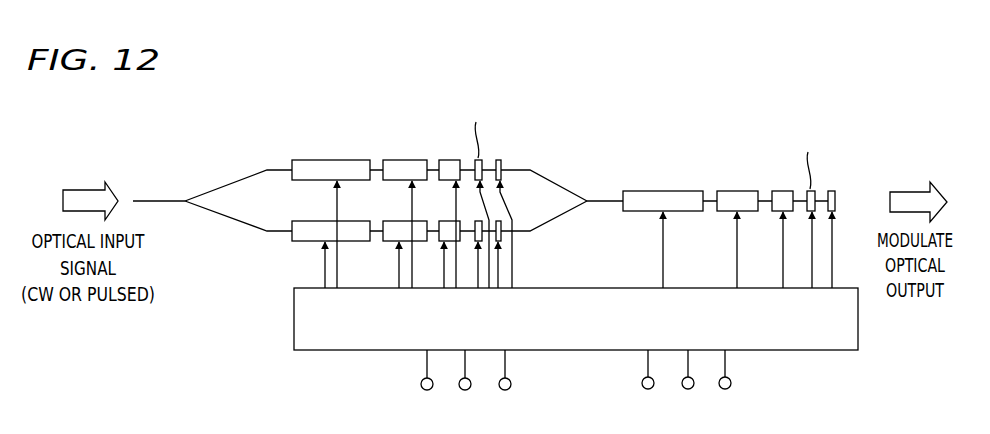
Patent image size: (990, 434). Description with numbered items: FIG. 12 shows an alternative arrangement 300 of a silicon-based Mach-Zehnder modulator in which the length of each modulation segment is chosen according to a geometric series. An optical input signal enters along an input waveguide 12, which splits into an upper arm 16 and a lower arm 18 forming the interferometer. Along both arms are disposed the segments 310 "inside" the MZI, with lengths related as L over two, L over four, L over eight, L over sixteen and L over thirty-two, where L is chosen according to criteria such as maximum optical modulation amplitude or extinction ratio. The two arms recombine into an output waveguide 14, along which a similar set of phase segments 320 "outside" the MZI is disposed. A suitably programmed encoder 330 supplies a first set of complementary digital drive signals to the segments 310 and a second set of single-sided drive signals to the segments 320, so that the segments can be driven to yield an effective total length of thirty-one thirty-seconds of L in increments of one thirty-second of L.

The optical input waveguide 12 is at (157, 200).
The output waveguide 14 is at (603, 198).
The first waveguide arm 16 is at (225, 180).
The second waveguide arm 18 is at (225, 220).
The alternative arrangement 300 is at (590, 95).
The segments inside MZI 310 is at (285, 88).
The segments outside MZI 320 is at (863, 132).
The encoder 330 is at (294, 318).